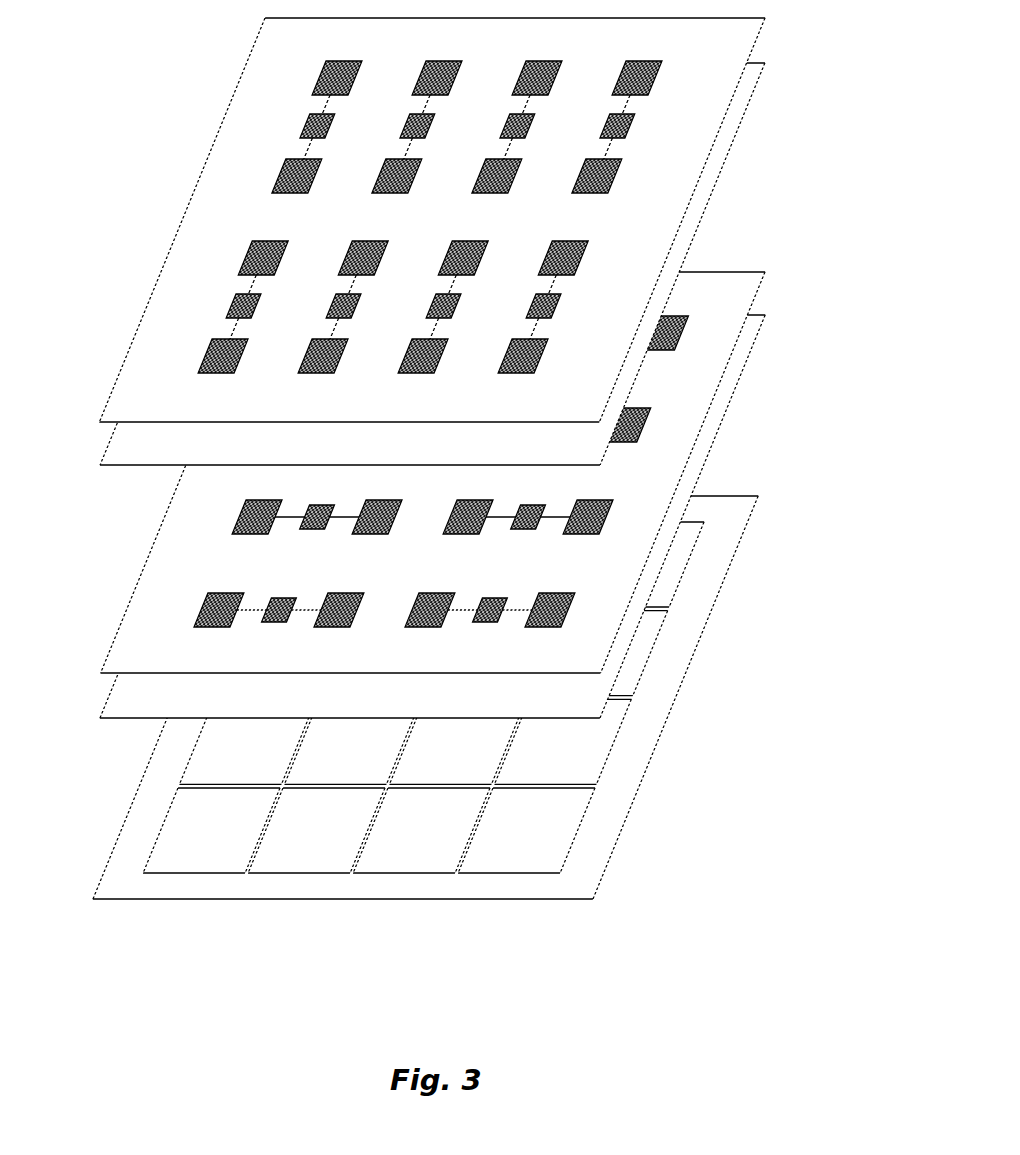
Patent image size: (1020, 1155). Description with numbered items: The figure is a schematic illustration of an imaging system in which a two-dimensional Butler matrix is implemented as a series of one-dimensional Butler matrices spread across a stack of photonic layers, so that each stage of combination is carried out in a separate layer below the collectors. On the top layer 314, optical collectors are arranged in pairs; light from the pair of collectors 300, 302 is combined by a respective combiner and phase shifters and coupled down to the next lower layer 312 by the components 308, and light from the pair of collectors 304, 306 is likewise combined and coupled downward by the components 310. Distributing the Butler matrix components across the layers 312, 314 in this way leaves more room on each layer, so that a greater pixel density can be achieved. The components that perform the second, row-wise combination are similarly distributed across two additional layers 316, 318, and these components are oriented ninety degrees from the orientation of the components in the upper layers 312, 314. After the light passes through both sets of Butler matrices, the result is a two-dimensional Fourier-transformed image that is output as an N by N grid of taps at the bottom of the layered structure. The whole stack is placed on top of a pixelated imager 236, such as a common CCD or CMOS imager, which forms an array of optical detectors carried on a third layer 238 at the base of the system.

The collector 300 is at (315, 82).
The components 308 is at (307, 127).
The collector 302 is at (278, 177).
The collector 304 is at (245, 262).
The components 310 is at (230, 307).
The collector 306 is at (200, 367).
The top layer 314 is at (757, 34).
The next lower layer 312 is at (742, 113).
The additional layer 316 is at (757, 288).
The additional layer 318 is at (737, 377).
The third layer 238 is at (730, 547).
The pixelated imager 236 is at (552, 835).